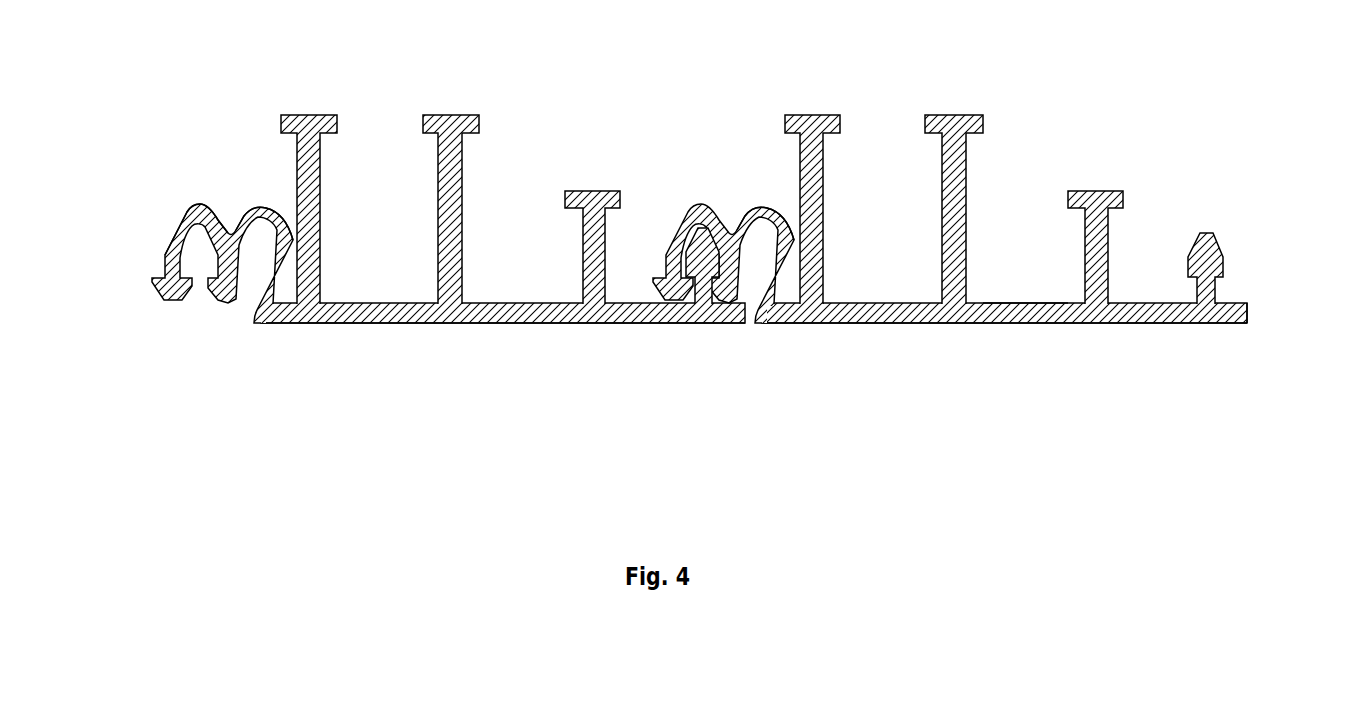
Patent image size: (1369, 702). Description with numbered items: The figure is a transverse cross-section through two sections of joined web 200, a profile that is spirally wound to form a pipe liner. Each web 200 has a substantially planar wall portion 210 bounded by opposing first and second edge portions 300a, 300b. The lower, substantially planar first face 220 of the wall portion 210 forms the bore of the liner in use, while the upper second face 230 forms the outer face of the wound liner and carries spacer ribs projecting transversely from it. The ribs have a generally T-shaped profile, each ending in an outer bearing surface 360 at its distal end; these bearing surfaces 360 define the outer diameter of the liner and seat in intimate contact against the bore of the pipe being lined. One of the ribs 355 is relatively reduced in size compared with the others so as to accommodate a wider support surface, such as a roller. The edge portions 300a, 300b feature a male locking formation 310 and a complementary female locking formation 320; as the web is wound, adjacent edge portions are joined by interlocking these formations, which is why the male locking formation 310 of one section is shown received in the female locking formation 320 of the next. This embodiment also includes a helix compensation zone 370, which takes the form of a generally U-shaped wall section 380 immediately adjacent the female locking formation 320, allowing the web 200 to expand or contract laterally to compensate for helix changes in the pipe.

The web 200 is at (707, 252).
The wall portion 210 is at (877, 313).
The first face 220 is at (508, 325).
The second face 230 is at (1022, 303).
The first edge portion 300a is at (1261, 272).
The second edge portion 300b is at (160, 297).
The male locking formation 310 is at (1223, 232).
The female locking formation 320 is at (192, 200).
The reduced-size rib 355 is at (596, 186).
The outer bearing surface 360 is at (317, 115).
The helix compensation zone 370 is at (240, 203).
The U-shaped wall section 380 is at (267, 210).